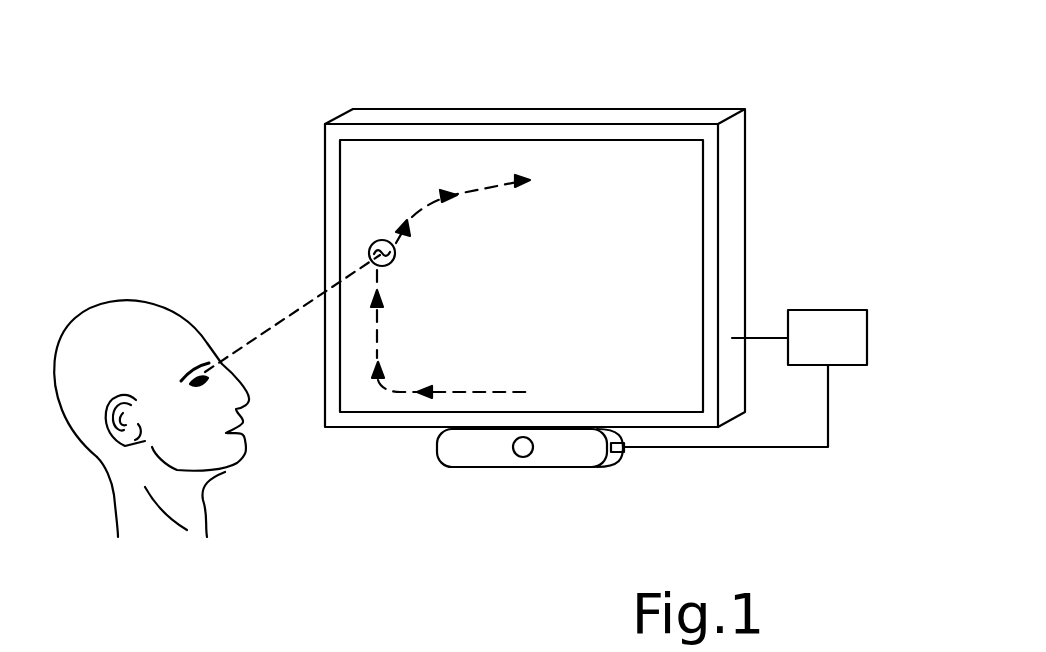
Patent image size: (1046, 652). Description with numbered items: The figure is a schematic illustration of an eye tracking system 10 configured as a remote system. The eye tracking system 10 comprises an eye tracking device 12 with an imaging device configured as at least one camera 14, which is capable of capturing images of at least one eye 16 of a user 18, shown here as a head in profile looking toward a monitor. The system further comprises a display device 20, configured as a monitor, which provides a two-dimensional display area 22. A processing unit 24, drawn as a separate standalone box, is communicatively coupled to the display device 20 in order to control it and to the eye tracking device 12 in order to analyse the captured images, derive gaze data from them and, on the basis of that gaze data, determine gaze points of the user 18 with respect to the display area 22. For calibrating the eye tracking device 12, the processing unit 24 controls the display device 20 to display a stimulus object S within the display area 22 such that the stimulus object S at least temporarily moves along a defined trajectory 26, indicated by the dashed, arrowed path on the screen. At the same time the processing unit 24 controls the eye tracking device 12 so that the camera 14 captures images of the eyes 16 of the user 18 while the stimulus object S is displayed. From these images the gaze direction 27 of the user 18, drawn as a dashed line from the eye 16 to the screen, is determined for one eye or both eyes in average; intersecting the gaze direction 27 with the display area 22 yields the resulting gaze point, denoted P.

The eye tracking system 10 is at (182, 107).
The eye tracking device 12 is at (593, 453).
The camera 14 is at (523, 455).
The eye 16 is at (197, 364).
The user 18 is at (118, 320).
The display device 20 is at (382, 118).
The display area 22 is at (493, 157).
The processing unit 24 is at (799, 337).
The trajectory 26 is at (427, 202).
The gaze direction 27 is at (283, 323).
The stimulus object S is at (396, 254).
The gaze point P is at (392, 265).